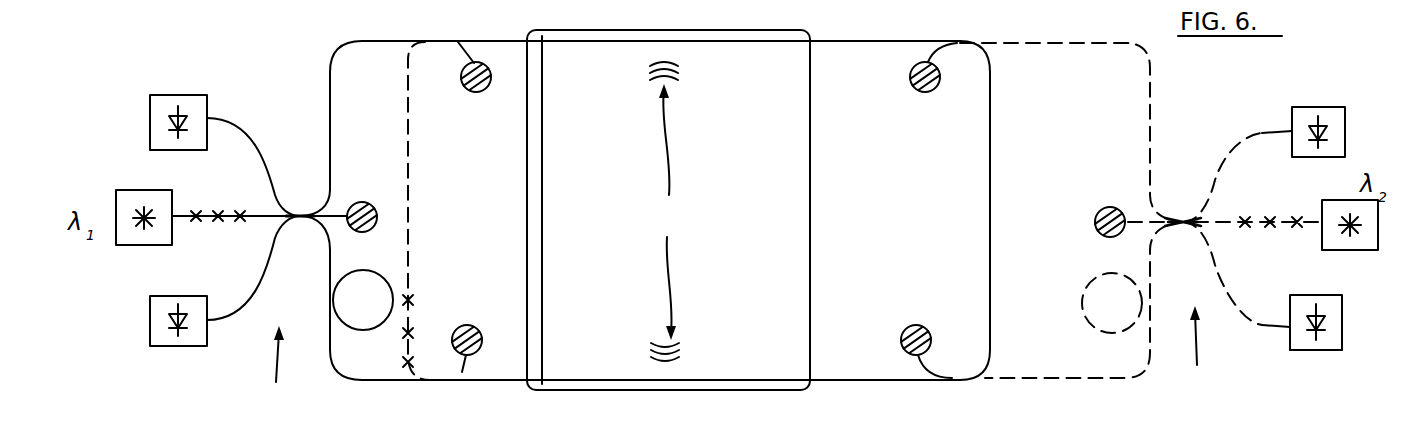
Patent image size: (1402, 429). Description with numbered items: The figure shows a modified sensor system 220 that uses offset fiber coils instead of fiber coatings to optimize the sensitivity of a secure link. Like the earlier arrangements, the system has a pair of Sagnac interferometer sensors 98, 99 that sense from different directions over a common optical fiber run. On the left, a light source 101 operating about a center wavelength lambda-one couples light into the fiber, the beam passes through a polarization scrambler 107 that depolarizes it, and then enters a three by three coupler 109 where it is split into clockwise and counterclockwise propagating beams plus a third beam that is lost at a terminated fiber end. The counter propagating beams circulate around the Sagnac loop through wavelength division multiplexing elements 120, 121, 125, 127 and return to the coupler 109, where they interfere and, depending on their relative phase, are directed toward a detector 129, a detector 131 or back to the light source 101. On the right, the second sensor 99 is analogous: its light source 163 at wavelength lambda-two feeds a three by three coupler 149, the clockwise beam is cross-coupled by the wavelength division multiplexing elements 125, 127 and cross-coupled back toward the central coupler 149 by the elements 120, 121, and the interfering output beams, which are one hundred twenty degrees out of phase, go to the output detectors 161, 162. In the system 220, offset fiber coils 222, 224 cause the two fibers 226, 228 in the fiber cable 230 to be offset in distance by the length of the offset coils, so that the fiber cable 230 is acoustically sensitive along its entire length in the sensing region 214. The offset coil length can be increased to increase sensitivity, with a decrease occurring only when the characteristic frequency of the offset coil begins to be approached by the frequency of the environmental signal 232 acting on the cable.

The sensor 98 is at (269, 373).
The sensor 99 is at (1088, 225).
The light source 101 is at (128, 246).
The polarization scrambler 107 is at (216, 219).
The 3 by 3 coupler 109 is at (296, 230).
The wavelength division multiplexing element 120 is at (440, 40).
The wavelength division multiplexing element 121 is at (948, 42).
The wavelength division multiplexing element 125 is at (952, 380).
The wavelength division multiplexing element 127 is at (442, 382).
The detector 129 is at (172, 347).
The detector 131 is at (175, 94).
The 3 by 3 coupler 149 is at (1182, 236).
The output detector 161 is at (1330, 80).
The output detector 162 is at (1306, 352).
The second light source 163 is at (1352, 252).
The sensing region 214 is at (720, 425).
The modified sensor system 220 is at (316, 78).
The offset fiber coil 222 is at (381, 273).
The offset fiber coil 224 is at (1095, 274).
The fiber 226 is at (715, 40).
The fiber 228 is at (599, 384).
The fiber cable 230 is at (782, 392).
The environmental signal 232 is at (671, 211).